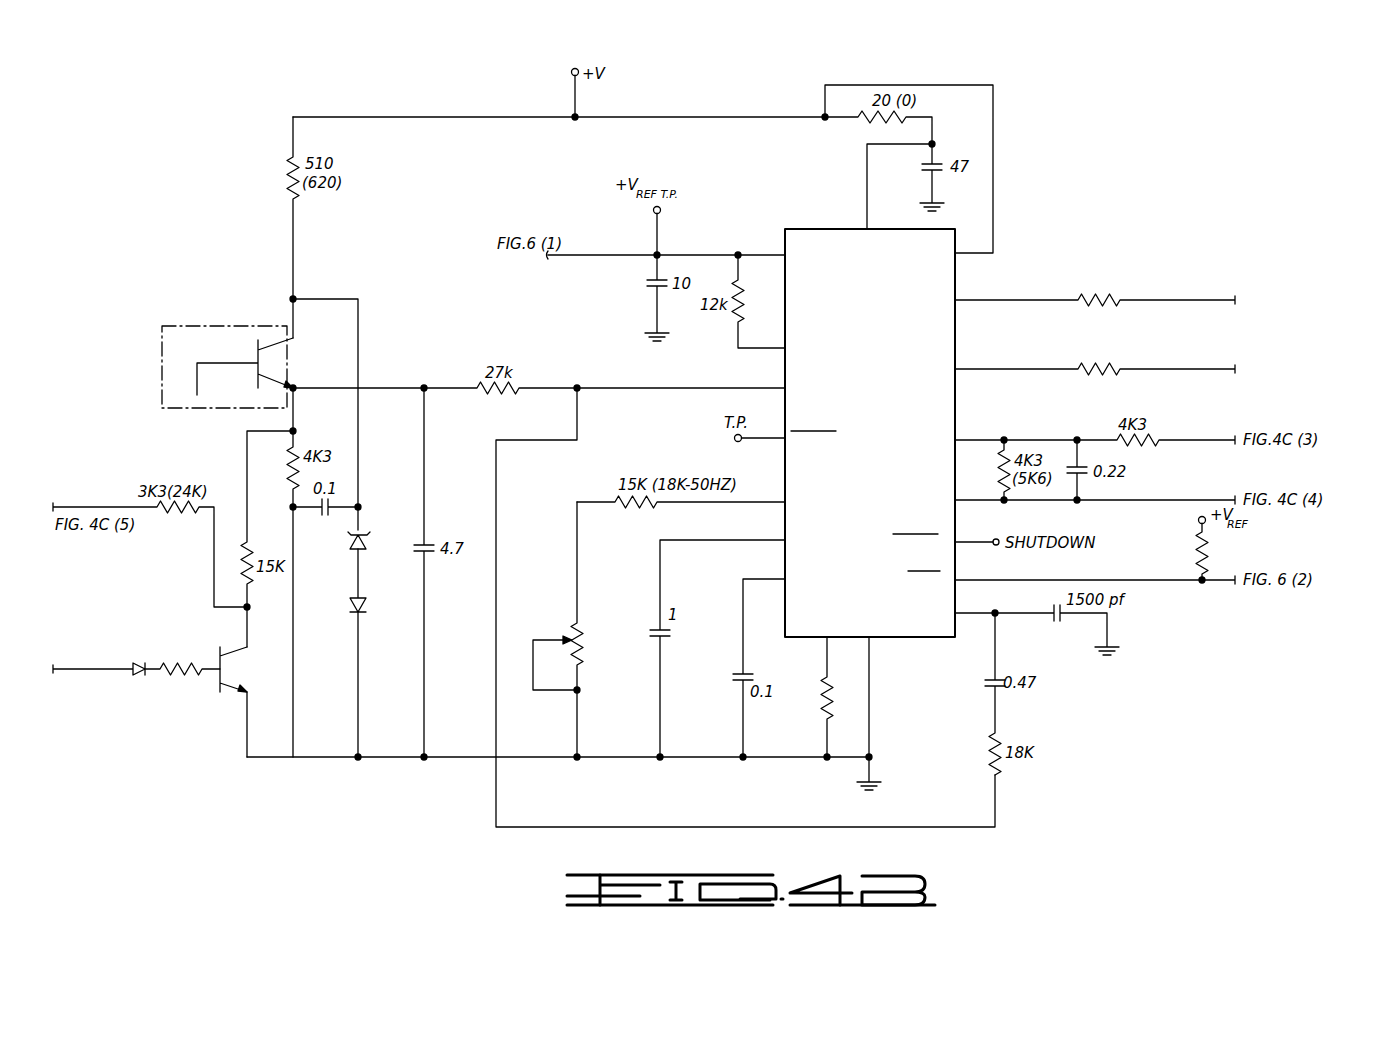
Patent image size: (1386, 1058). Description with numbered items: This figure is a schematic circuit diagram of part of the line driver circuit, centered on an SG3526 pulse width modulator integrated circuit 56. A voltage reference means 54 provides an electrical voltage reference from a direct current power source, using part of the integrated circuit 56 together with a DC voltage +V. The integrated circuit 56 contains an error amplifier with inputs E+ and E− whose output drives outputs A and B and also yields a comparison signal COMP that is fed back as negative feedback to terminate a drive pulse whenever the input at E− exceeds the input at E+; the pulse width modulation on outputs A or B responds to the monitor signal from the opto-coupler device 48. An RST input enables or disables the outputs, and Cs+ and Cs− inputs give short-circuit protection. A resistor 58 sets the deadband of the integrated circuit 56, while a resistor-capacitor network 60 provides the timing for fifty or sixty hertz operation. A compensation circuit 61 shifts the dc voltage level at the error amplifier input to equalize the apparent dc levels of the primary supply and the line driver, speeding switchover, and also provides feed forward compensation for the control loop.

The opto-coupler device 48 is at (220, 323).
The voltage reference means 54 is at (762, 246).
The pulse width modulator integrated circuit 56 is at (955, 272).
The resistor 58 is at (822, 698).
The resistor-capacitor network 60 is at (632, 655).
The compensation circuit 61 is at (160, 693).